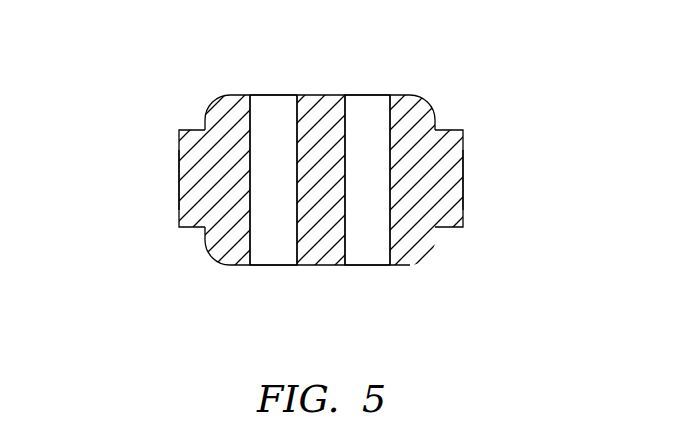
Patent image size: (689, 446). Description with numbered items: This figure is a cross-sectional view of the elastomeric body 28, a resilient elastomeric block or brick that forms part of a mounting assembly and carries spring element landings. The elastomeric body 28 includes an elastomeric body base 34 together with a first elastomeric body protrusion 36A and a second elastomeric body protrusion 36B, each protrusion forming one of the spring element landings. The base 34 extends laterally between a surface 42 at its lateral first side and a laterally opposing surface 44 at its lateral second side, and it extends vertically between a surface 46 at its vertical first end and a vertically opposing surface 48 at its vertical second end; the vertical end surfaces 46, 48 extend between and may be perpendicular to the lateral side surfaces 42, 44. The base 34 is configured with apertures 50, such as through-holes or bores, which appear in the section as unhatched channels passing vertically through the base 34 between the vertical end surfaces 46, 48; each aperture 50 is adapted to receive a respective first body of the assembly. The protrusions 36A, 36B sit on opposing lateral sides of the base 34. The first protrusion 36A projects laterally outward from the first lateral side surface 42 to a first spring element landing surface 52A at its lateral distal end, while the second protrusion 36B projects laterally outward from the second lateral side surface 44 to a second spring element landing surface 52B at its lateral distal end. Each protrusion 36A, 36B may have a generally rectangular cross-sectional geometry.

The elastomeric body 28 is at (318, 182).
The elastomeric body base 34 is at (216, 275).
The first elastomeric body protrusion 36A is at (474, 160).
The second elastomeric body protrusion 36B is at (170, 188).
The lateral first side surface 42 is at (437, 120).
The lateral second side surface 44 is at (203, 122).
The vertical first end surface 46 is at (318, 95).
The vertical second end surface 48 is at (317, 265).
The apertures 50 is at (268, 252).
The first spring element landing surface 52A is at (463, 207).
The second spring element landing surface 52B is at (178, 158).